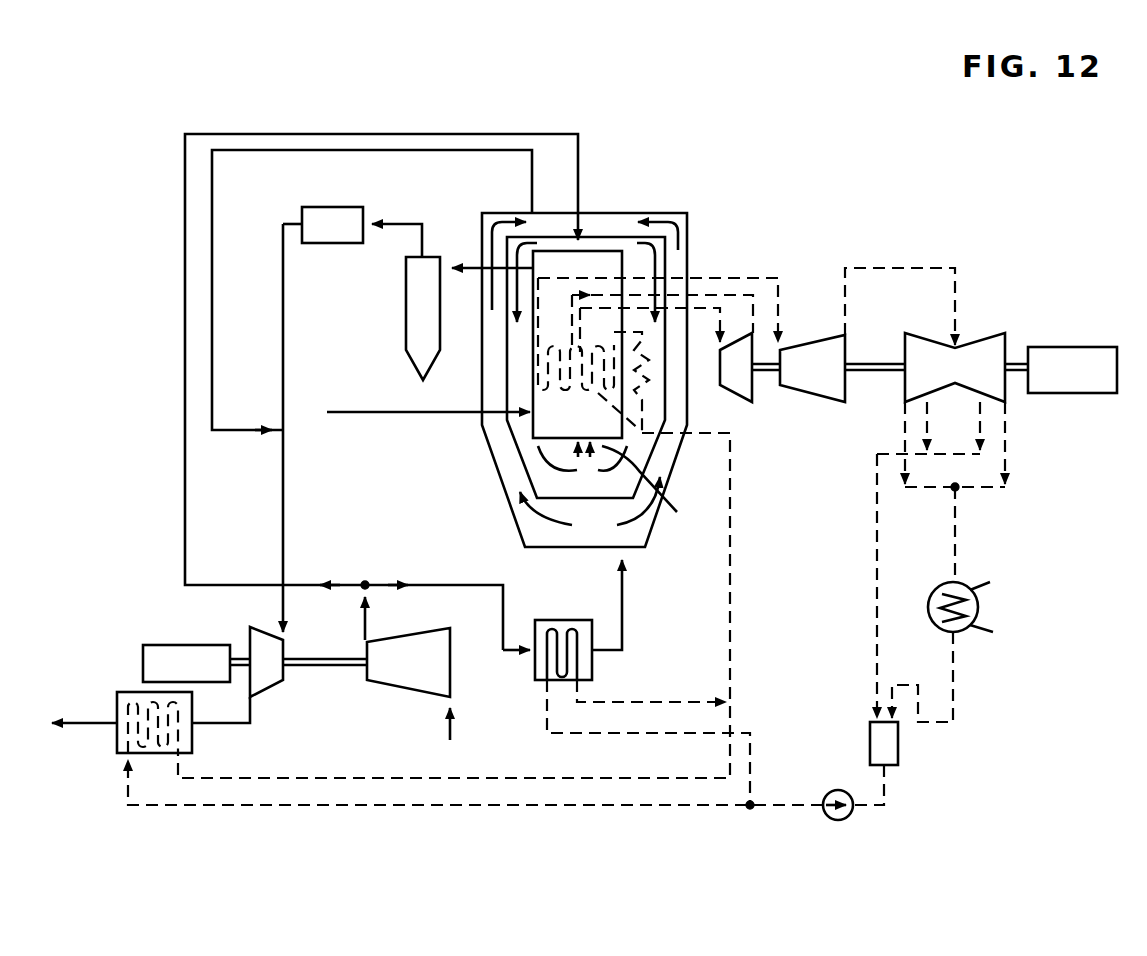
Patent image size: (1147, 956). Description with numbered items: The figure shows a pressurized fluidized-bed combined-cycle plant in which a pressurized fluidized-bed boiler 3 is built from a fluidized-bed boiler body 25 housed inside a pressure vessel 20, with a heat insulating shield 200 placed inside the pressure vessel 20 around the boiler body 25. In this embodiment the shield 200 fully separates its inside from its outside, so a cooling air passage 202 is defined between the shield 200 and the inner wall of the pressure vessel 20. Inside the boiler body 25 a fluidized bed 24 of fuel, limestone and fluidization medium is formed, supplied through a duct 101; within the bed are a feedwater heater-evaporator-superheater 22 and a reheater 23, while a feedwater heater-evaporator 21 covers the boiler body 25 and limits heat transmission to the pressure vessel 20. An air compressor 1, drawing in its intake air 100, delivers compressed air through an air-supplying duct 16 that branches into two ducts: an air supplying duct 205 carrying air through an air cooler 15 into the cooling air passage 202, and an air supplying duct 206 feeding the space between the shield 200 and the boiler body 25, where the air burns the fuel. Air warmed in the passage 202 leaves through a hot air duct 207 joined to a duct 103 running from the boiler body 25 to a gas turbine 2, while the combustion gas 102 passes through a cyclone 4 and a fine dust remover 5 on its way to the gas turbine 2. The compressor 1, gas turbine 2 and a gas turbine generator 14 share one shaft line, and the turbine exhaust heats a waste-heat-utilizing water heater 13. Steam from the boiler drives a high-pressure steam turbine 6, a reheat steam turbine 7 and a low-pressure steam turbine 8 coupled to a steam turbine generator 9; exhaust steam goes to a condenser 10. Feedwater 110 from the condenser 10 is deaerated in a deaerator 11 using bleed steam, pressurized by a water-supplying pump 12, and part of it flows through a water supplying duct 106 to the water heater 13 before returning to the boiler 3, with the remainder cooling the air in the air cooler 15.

The air compressor 1 is at (417, 692).
The gas turbine 2 is at (272, 687).
The pressurized fluidized-bed boiler 3 is at (667, 248).
The cyclone 4 is at (406, 300).
The fine dust remover 5 is at (328, 207).
The high-pressure steam turbine 6 is at (740, 388).
The reheat steam turbine 7 is at (812, 337).
The low-pressure steam turbine 8 is at (980, 333).
The steam turbine generator 9 is at (1072, 347).
The condenser 10 is at (980, 607).
The deaerator 11 is at (898, 750).
The water-supplying pump 12 is at (838, 820).
The waste-heat-utilizing water heater 13 is at (117, 700).
The gas turbine generator 14 is at (173, 645).
The air cooler 15 is at (562, 620).
The air-supplying duct 16 is at (365, 626).
The pressure vessel 20 is at (672, 213).
The feedwater heater-evaporator 21 is at (646, 397).
The feedwater heater-evaporator-superheater 22 is at (636, 424).
The reheater 23 is at (545, 400).
The fluidized bed 24 is at (658, 487).
The fluidized-bed boiler body 25 is at (600, 251).
The air supply line 100 is at (453, 728).
The duct 101 is at (350, 412).
The combustion gas 102 is at (472, 262).
The duct 103 is at (283, 343).
The water supplying duct 106 is at (790, 803).
The feedwater 110 is at (958, 673).
The heat insulating shield 200 is at (517, 445).
The cooling air passage 202 is at (512, 518).
The air supplying duct 205 is at (622, 604).
The air supplying duct 206 is at (186, 530).
The hot air duct 207 is at (253, 150).